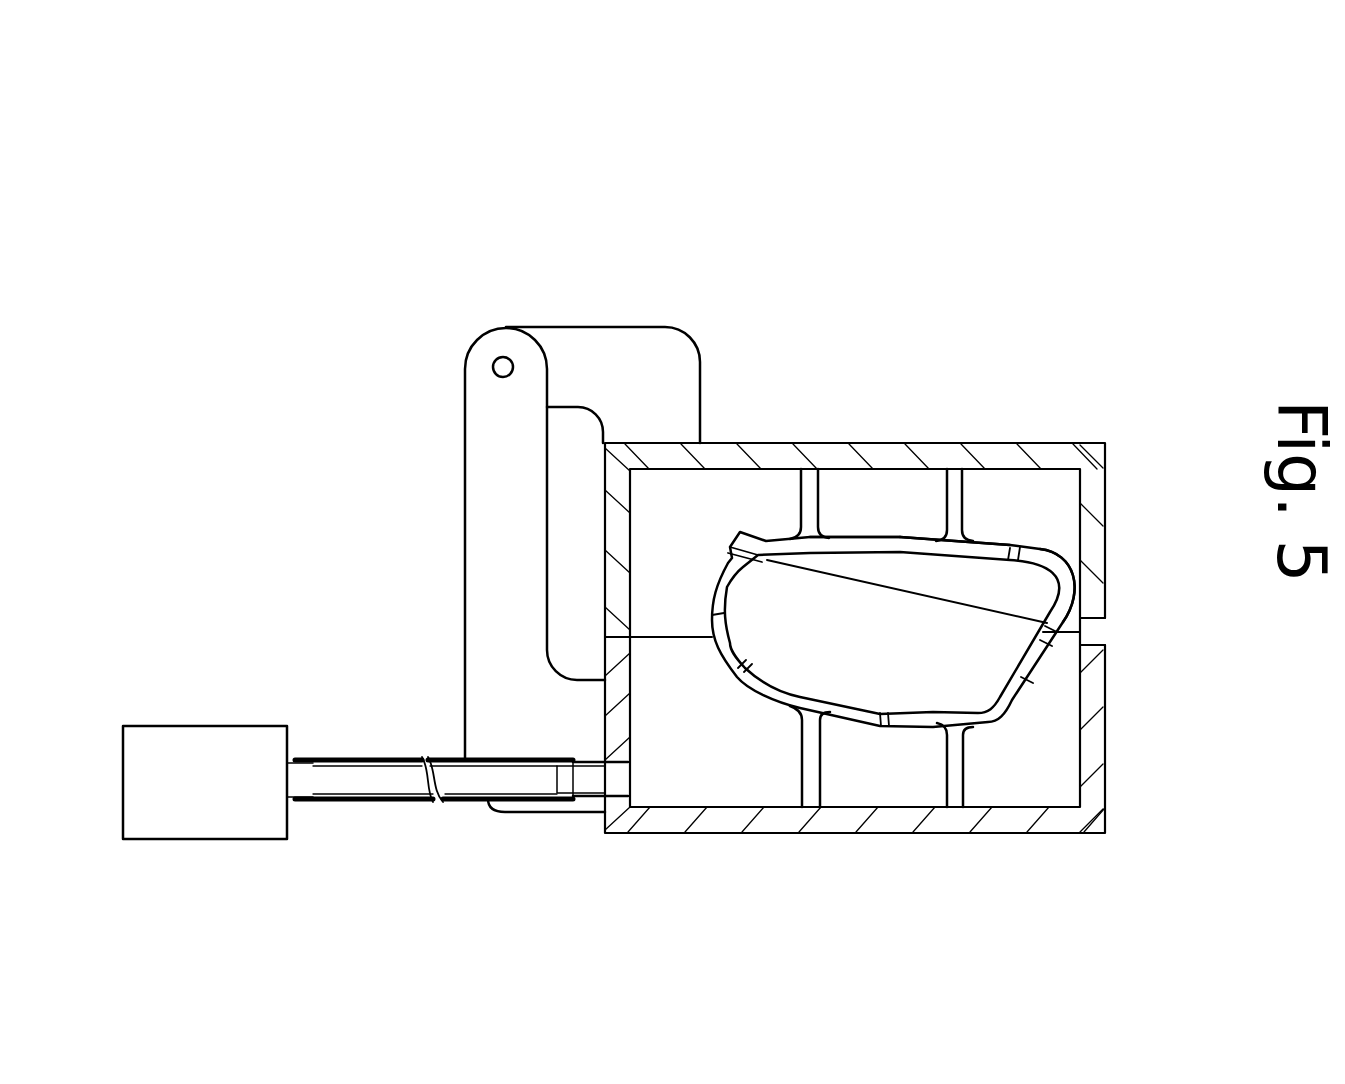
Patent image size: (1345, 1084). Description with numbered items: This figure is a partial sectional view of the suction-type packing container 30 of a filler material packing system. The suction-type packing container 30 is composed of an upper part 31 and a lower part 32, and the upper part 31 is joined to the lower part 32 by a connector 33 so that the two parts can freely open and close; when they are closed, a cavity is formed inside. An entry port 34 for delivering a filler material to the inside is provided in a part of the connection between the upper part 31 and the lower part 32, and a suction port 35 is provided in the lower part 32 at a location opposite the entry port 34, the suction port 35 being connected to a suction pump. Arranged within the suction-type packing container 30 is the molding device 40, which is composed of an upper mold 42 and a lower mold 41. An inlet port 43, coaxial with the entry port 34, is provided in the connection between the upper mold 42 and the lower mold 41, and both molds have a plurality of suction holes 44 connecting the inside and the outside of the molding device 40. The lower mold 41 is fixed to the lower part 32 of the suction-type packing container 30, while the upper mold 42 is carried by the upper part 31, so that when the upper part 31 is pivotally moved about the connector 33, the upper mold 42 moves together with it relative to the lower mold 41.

The suction-type packing container 30 is at (605, 270).
The upper part 31 is at (1093, 547).
The lower part 32 is at (890, 833).
The connector 33 is at (478, 403).
The entry port 34 is at (1093, 637).
The suction port 35 is at (562, 782).
The molding device 40 is at (770, 527).
The lower mold 41 is at (973, 713).
The upper mold 42 is at (920, 540).
The inlet port 43 is at (1030, 580).
The suction holes 44 is at (885, 545).